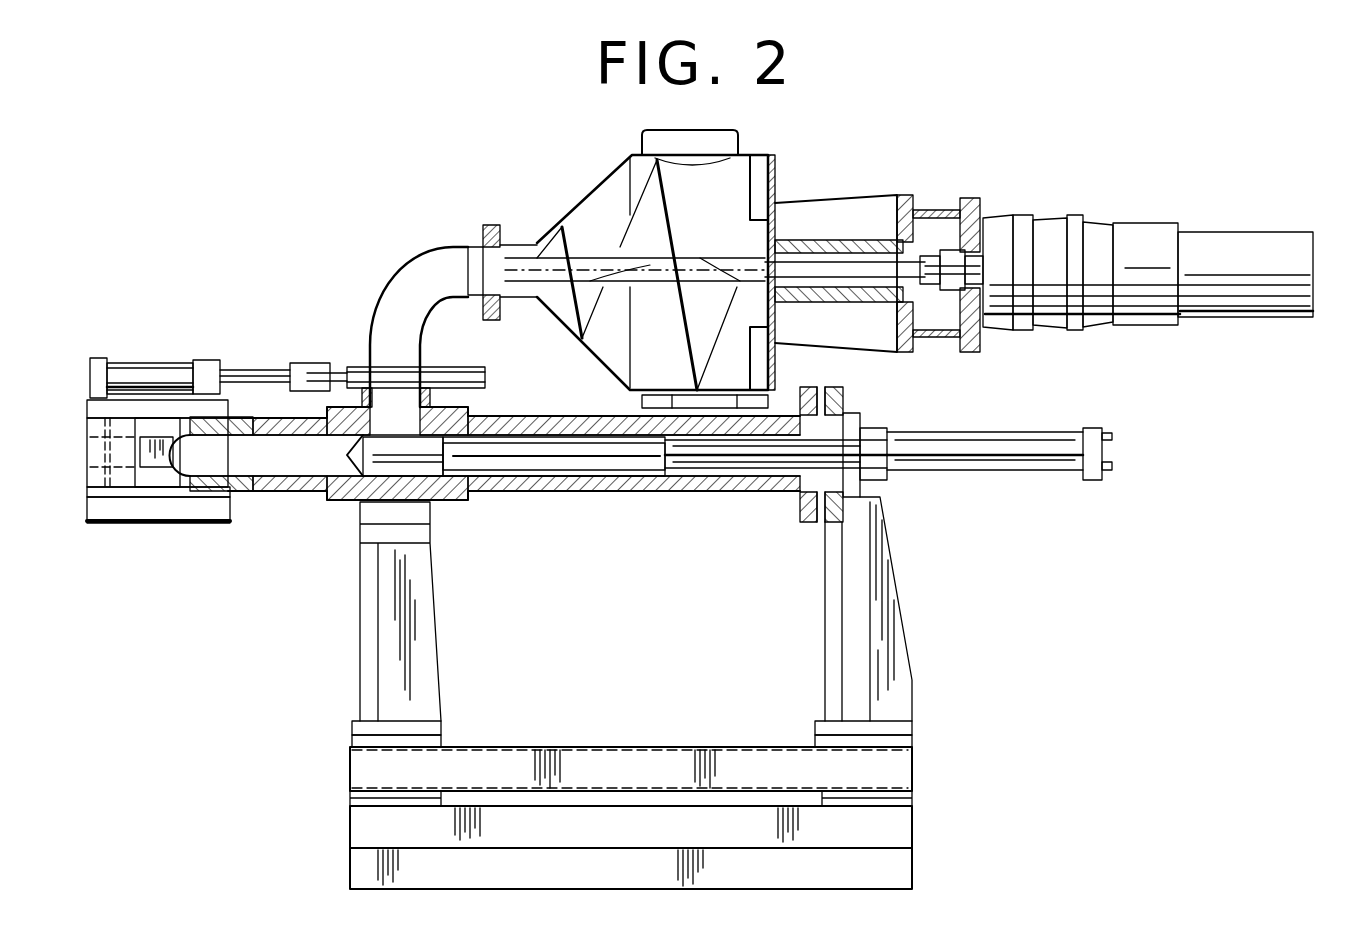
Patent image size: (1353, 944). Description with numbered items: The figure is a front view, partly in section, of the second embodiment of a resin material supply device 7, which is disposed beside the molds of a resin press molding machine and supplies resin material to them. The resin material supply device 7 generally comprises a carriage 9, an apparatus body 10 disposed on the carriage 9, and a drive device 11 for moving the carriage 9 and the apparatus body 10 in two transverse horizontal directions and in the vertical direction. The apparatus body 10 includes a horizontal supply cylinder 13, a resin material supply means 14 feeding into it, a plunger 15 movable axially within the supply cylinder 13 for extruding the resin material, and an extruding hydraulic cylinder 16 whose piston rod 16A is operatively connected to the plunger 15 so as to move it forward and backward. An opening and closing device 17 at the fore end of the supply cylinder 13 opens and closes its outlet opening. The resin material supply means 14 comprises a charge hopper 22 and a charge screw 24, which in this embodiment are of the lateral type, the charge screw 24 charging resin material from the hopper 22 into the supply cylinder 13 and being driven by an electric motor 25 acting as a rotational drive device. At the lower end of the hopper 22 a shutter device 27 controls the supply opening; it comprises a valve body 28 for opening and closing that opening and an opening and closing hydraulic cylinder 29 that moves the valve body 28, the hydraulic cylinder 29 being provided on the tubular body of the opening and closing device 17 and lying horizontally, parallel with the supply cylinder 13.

The resin material supply device 7 is at (910, 616).
The carriage 9 is at (638, 842).
The apparatus body 10 is at (356, 578).
The drive device 11 is at (636, 879).
The supply cylinder 13 is at (602, 492).
The resin material supply means 14 is at (578, 210).
The plunger 15 is at (651, 478).
The extruding hydraulic cylinder 16 is at (1056, 460).
The piston rod 16A is at (745, 468).
The opening and closing device 17 is at (151, 524).
The charge hopper 22 is at (560, 318).
The charge screw 24 is at (698, 317).
The electric motor 25 is at (1252, 302).
The shutter device 27 is at (355, 303).
The valve body 28 is at (336, 365).
The opening and closing hydraulic cylinder 29 is at (210, 363).